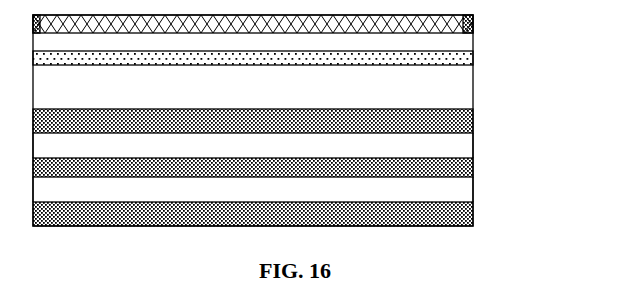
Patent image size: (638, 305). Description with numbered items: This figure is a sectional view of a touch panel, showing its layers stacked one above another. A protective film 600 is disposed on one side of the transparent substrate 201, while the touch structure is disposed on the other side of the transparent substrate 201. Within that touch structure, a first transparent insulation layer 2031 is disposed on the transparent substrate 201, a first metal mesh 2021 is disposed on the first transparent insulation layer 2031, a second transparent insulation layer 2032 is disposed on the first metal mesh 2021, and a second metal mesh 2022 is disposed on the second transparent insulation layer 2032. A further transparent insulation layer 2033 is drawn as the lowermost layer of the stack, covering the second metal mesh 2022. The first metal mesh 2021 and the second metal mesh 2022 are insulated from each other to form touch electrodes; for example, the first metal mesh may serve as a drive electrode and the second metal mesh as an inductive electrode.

The protective film 600 is at (477, 15).
The transparent substrate 201 is at (473, 68).
The first transparent insulation layer 2031 is at (473, 119).
The first metal mesh 2021 is at (473, 143).
The second transparent insulation layer 2032 is at (473, 169).
The second metal mesh 2022 is at (473, 193).
The third conductive layer 2033 is at (473, 220).